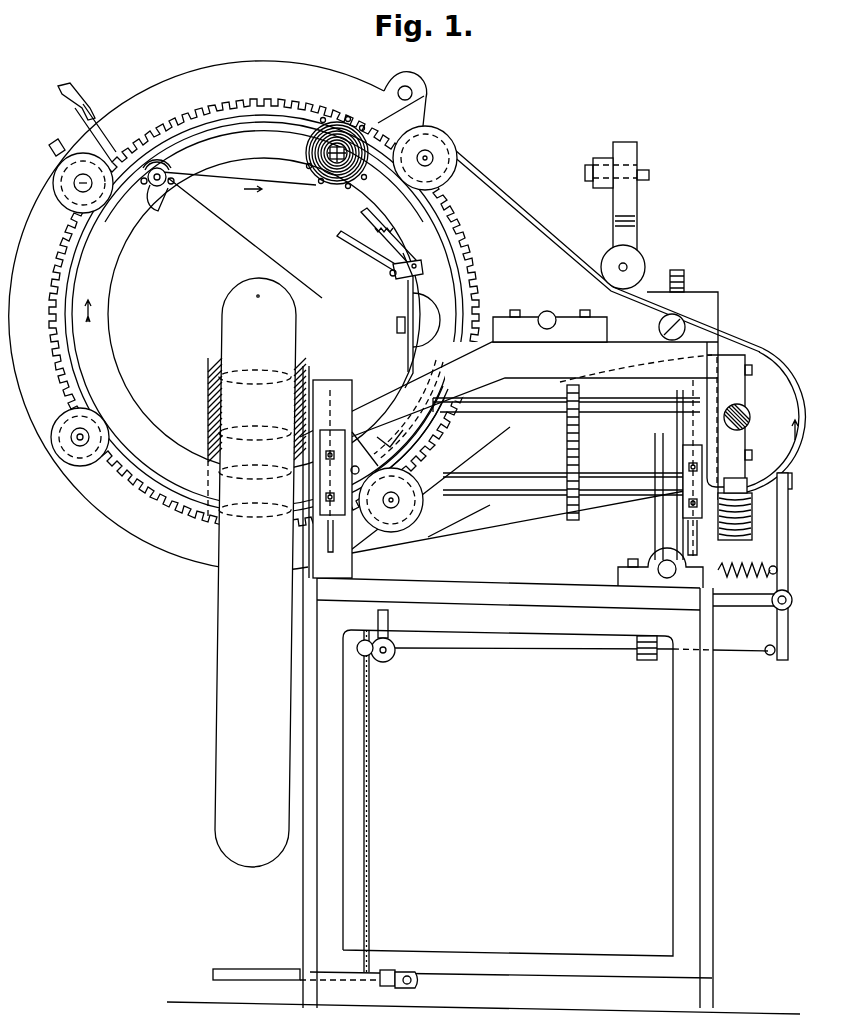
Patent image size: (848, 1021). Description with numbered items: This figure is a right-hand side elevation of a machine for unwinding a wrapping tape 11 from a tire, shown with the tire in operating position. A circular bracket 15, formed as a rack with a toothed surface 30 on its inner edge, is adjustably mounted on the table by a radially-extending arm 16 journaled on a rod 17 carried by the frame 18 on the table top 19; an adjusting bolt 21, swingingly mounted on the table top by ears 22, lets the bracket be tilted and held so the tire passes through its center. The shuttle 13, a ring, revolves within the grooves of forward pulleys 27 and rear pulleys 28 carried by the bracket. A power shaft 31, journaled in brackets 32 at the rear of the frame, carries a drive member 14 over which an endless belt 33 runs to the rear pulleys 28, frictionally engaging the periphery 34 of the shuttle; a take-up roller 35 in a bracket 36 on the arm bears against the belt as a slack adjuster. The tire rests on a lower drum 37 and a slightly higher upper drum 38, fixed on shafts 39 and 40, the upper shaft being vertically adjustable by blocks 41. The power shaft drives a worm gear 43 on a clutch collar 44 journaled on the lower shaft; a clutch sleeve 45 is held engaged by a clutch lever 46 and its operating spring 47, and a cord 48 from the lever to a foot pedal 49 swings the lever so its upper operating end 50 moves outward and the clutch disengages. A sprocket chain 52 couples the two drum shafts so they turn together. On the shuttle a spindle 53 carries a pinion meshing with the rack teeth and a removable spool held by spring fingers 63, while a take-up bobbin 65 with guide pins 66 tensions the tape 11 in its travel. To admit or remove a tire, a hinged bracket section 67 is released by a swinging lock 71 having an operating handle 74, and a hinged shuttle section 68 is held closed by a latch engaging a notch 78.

The fabric strip or tape 11 is at (270, 252).
The shuttle 13 is at (119, 371).
The drive member 14 is at (768, 352).
The circular bracket 15 is at (196, 316).
The radially-extending arm 16 is at (550, 294).
The rod 17 is at (548, 311).
The frame 18 is at (509, 394).
The table top 19 is at (410, 258).
The adjusting bolt 21 is at (688, 281).
The ears 22 is at (618, 574).
The forward grooved pulleys 27 is at (67, 205).
The rear grooved pulleys 28 is at (447, 146).
The toothed surface 30 is at (223, 106).
The power shaft 31 is at (746, 409).
The brackets 32 is at (757, 452).
The endless belt 33 is at (510, 193).
The periphery of the shuttle 34 is at (283, 112).
The take-up roller 35 is at (646, 267).
The bracket 36 is at (597, 160).
The drum 37 is at (226, 462).
The drum 38 is at (220, 393).
The lower shaft 39 is at (486, 487).
The upper shaft 40 is at (588, 414).
The adjustable blocks 41 is at (335, 428).
The worm gear 43 is at (712, 531).
The clutch collar 44 is at (758, 530).
The clutch sleeve 45 is at (778, 478).
The clutch lever 46 is at (790, 591).
The operating spring 47 is at (717, 582).
The cord 48 is at (530, 655).
The foot pedal 49 is at (241, 973).
The upper operating end 50 is at (788, 535).
The sprocket chain 52 is at (565, 436).
The spindle 53 is at (340, 124).
The spring fingers 63 is at (340, 190).
The take-up bobbin 65 is at (168, 172).
The guide pins 66 is at (165, 197).
The hinged section of the bracket 67 is at (288, 104).
The hinged section of the shuttle 68 is at (406, 352).
The swinging lock 71 is at (70, 130).
The operating handle 74 is at (66, 86).
The notch 78 is at (456, 262).